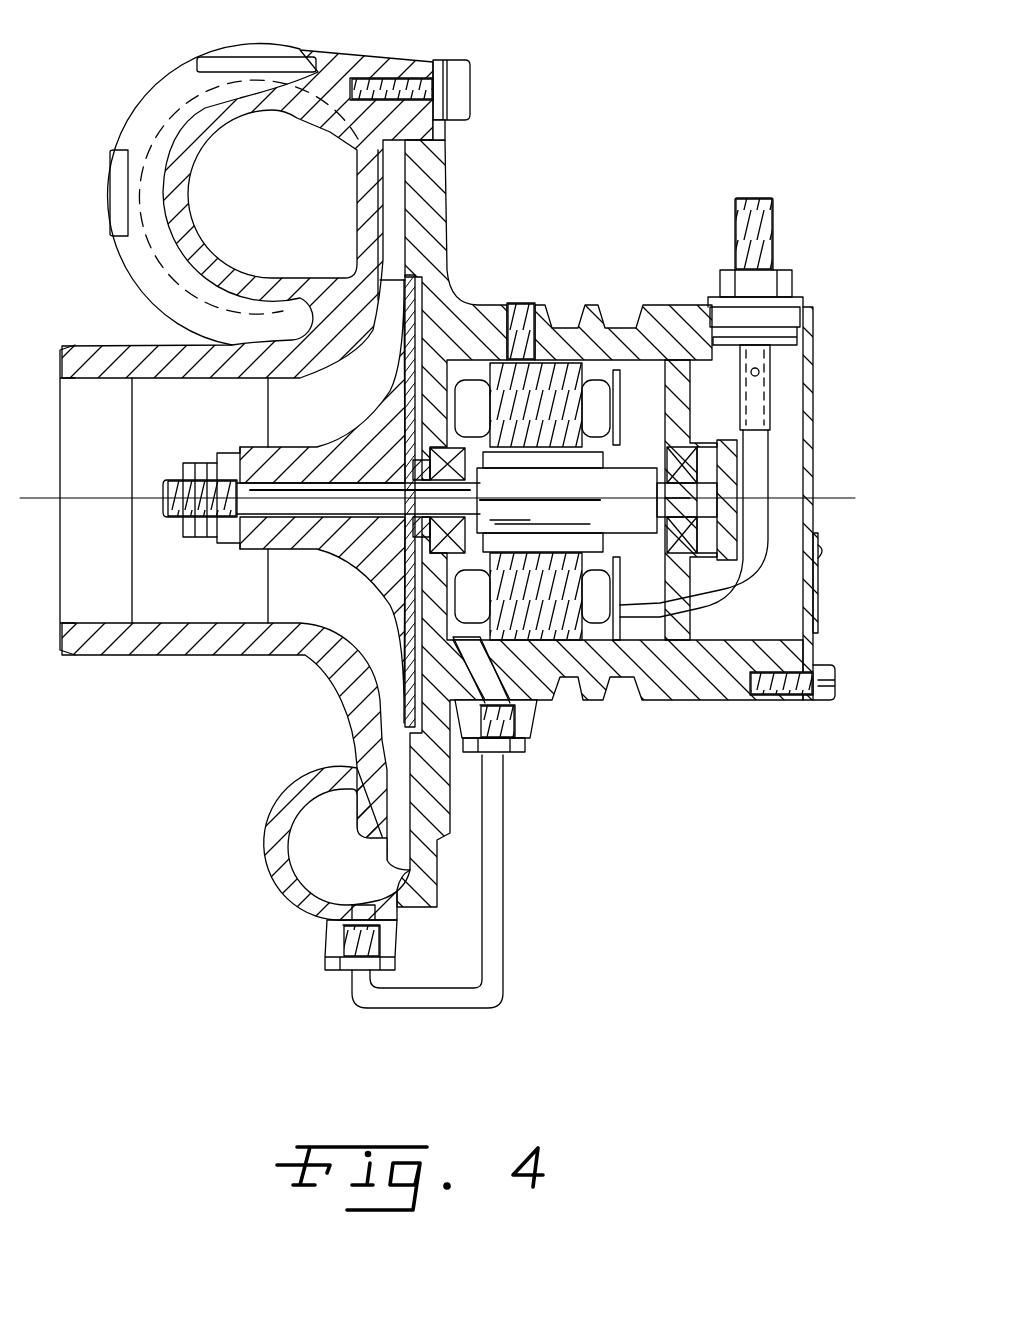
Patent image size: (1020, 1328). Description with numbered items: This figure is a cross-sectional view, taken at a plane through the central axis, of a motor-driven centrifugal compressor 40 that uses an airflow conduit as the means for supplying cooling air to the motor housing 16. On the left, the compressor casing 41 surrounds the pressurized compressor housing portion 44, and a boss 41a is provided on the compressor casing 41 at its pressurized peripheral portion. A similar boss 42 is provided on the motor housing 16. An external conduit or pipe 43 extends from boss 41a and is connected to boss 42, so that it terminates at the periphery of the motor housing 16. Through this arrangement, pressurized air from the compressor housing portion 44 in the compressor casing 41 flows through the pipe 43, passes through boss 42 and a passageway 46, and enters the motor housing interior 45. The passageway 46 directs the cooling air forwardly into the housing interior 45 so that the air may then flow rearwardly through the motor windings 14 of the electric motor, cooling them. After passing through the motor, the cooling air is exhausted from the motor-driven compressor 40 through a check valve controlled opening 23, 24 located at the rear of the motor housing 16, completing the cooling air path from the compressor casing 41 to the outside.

The motor-driven compressor 40 is at (655, 156).
The motor housing 16 is at (480, 303).
The motor windings 14 is at (552, 360).
The motor housing interior 45 is at (417, 617).
The passageway 46 is at (492, 688).
The boss 42 is at (533, 723).
The compressor casing 41 is at (263, 823).
The pressurized compressor housing portion 44 is at (367, 867).
The boss 41a is at (327, 937).
The pipe 43 is at (503, 885).
The check valve controlled opening 24 is at (818, 605).
The check valve controlled opening 23 is at (795, 620).